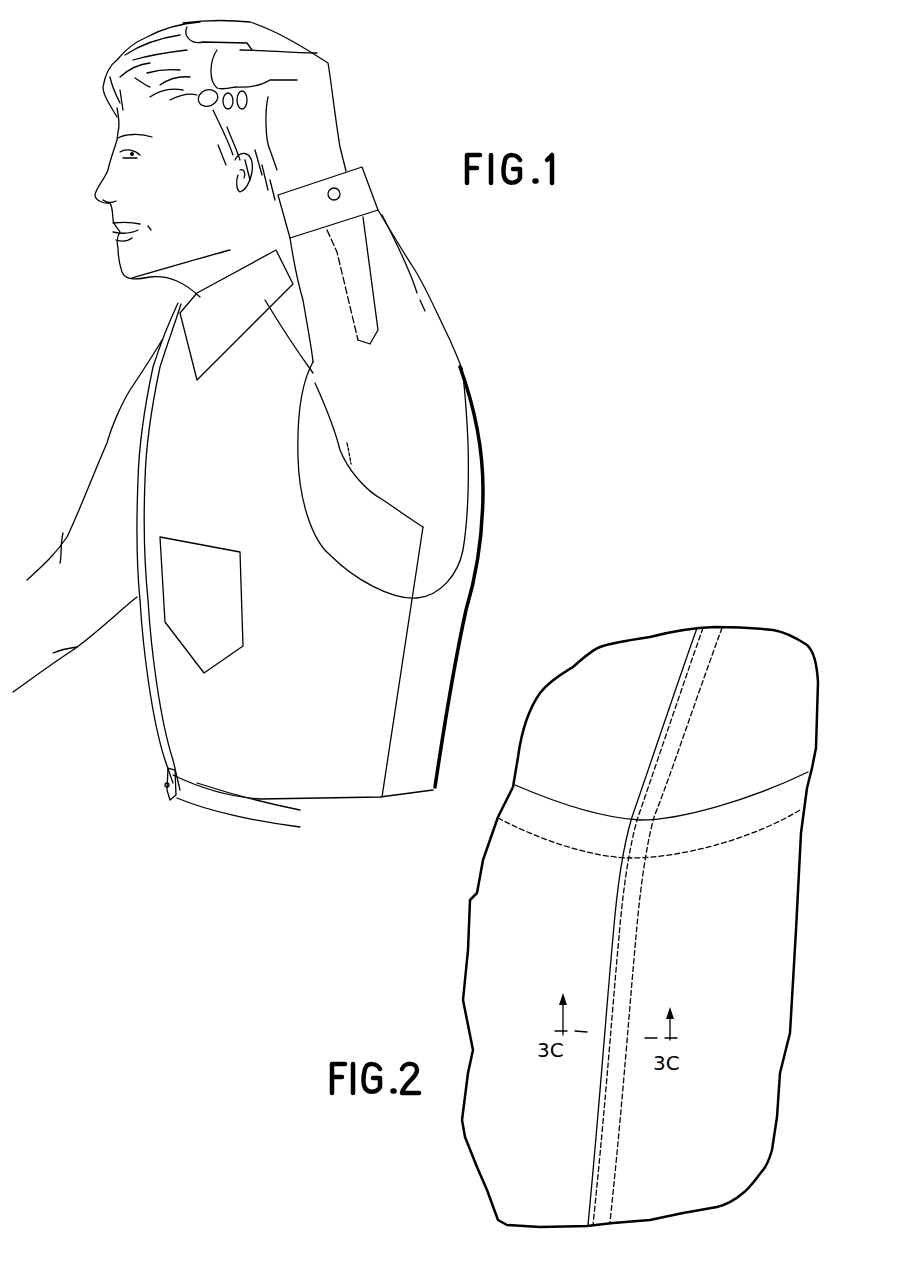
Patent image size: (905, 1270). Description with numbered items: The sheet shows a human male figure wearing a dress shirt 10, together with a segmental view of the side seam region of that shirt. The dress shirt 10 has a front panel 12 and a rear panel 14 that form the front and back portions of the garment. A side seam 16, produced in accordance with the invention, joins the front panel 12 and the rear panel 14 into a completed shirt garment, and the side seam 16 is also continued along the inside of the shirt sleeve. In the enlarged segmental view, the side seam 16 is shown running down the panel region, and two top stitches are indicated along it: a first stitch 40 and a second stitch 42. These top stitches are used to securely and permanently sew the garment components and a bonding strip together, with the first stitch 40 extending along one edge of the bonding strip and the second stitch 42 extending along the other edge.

In FIG. 1, the dress shirt 10 is at (113, 337).
In FIG. 1, the front panel 12 is at (245, 476).
In FIG. 2, the front panel 12 is at (490, 926).
In FIG. 1, the rear panel 14 is at (453, 603).
In FIG. 2, the rear panel 14 is at (772, 960).
In FIG. 1, the side seam 16 is at (395, 697).
In FIG. 2, the side seam 16 is at (603, 951).
In FIG. 2, the first stitch 40 is at (595, 1144).
In FIG. 2, the second stitch 42 is at (613, 1165).